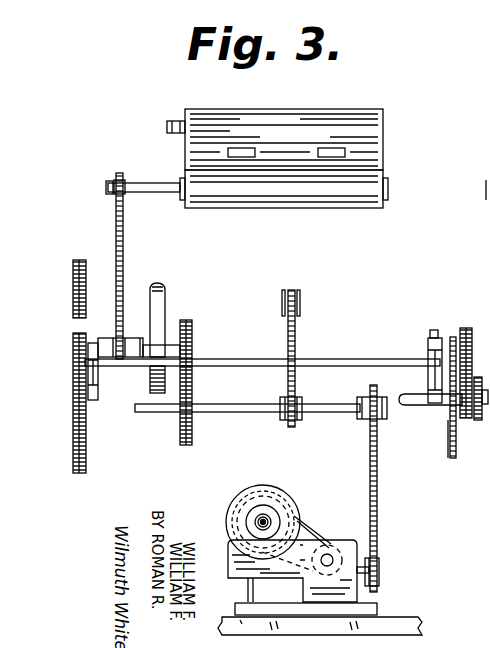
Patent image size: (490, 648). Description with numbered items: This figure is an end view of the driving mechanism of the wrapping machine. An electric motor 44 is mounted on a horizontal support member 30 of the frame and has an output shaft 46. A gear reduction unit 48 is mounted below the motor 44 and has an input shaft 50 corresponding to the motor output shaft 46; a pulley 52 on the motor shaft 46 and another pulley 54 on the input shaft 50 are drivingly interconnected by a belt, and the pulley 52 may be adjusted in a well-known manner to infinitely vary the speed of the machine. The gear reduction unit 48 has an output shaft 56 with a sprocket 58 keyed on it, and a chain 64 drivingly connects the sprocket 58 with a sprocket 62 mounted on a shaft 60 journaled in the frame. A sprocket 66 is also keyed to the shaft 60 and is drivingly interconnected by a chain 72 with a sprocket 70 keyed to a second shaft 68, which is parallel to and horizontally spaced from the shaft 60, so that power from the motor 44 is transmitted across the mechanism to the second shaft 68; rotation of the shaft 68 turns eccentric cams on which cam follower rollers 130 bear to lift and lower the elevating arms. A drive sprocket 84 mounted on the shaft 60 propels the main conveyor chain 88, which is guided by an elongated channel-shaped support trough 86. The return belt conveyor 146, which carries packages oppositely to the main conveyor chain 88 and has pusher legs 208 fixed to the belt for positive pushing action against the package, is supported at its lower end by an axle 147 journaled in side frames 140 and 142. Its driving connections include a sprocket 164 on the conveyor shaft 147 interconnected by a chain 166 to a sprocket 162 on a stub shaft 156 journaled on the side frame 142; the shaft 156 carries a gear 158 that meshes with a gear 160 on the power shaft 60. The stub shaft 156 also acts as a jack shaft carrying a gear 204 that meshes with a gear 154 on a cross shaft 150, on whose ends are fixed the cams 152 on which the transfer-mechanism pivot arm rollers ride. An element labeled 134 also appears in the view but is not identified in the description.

The horizontal support member 30 is at (395, 623).
The electric motor 44 is at (285, 494).
The output shaft 46 is at (257, 525).
The gear reduction unit 48 is at (250, 592).
The input shaft 50 is at (327, 545).
The pulley 52 is at (246, 497).
The pulley 54 is at (333, 549).
The output shaft 56 is at (376, 554).
The sprocket 58 is at (380, 582).
The shaft 60 is at (330, 411).
The sprocket 62 is at (385, 416).
The chain 64 is at (378, 476).
The sprocket 66 is at (460, 416).
The second shaft 68 is at (415, 398).
The sprocket 70 is at (457, 455).
The chain 72 is at (448, 435).
The drive sprocket 84 is at (297, 400).
The support trough 86 is at (300, 300).
The main conveyor chain 88 is at (296, 343).
The cam follower roller 130 is at (476, 420).
The frame member 134 is at (480, 190).
The side frame 140 is at (170, 124).
The side frame 142 is at (152, 381).
The return belt conveyor 146 is at (370, 156).
The axle 147 is at (150, 190).
The cross shaft 150 is at (257, 354).
The cam 152 is at (92, 400).
The gear 154 is at (80, 473).
The stub shaft 156 is at (170, 350).
The gear 158 is at (189, 329).
The gear 160 is at (192, 437).
The sprocket 162 is at (121, 336).
The sprocket 164 is at (118, 201).
The chain 166 is at (121, 258).
The gear 204 is at (82, 333).
The pusher legs 208 is at (320, 152).